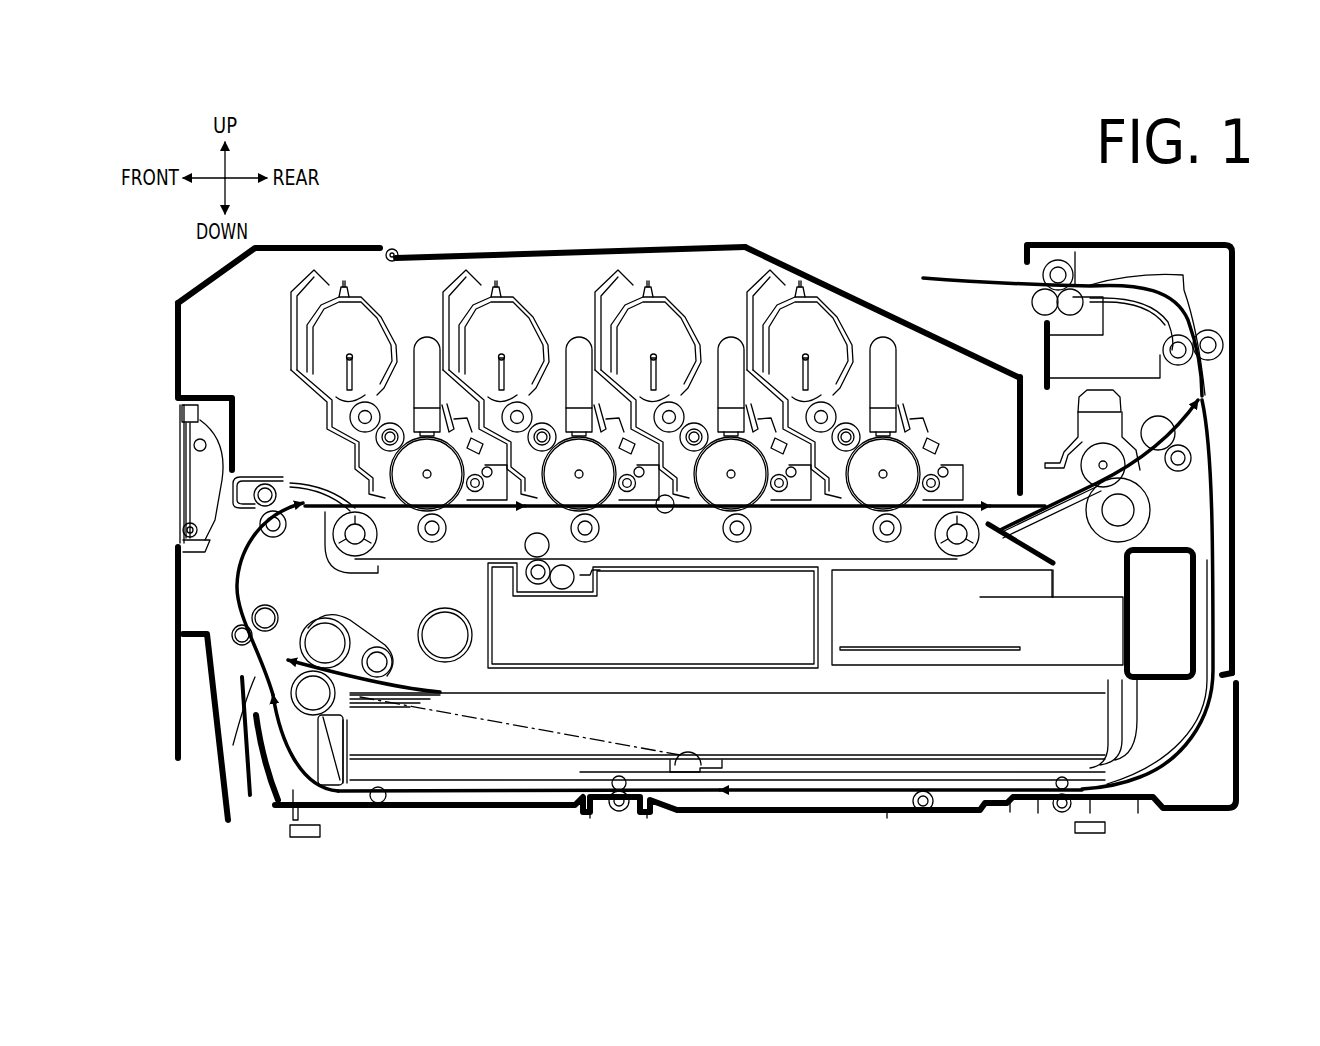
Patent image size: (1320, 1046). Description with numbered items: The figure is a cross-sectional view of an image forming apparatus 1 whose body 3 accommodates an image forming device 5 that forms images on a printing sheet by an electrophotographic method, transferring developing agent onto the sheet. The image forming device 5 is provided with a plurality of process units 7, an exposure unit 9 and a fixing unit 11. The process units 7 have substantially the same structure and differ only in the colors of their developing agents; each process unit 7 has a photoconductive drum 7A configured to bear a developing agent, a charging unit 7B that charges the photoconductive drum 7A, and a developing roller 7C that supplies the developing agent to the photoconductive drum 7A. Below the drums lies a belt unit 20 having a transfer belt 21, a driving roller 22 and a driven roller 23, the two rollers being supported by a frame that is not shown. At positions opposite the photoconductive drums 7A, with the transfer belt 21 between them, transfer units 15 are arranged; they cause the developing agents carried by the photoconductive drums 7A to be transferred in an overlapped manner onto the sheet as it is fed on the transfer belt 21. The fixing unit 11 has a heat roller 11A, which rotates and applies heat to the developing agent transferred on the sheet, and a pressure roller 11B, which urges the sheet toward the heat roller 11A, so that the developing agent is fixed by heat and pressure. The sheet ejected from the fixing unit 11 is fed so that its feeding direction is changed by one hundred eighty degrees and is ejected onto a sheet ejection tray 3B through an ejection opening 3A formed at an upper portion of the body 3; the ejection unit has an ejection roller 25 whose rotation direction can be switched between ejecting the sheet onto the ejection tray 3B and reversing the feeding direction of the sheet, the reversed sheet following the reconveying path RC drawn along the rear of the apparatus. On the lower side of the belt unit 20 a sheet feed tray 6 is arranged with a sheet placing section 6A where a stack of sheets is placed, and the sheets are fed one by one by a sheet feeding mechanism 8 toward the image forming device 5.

The image forming apparatus 1 is at (900, 180).
The body 3 is at (673, 240).
The ejection opening 3A is at (1015, 272).
The sheet ejection tray 3B is at (830, 262).
The image forming device 5 is at (263, 292).
The sheet feed tray 6 is at (430, 788).
The sheet placing section 6A is at (832, 758).
The process unit 7 is at (298, 268).
The photoconductive drum 7A is at (383, 338).
The charging unit 7B is at (502, 410).
The developing roller 7C is at (410, 437).
The sheet feeding mechanism 8 is at (292, 712).
The exposure unit 9 is at (427, 337).
The fixing unit 11 is at (1162, 466).
The heat roller 11A is at (1123, 455).
The pressure roller 11B is at (1150, 487).
The transfer unit 15 is at (428, 543).
The belt unit 20 is at (313, 554).
The transfer belt 21 is at (669, 513).
The driving roller 22 is at (946, 546).
The driven roller 23 is at (353, 560).
The ejection roller 25 is at (1058, 258).
The reconveying path RC is at (1172, 737).